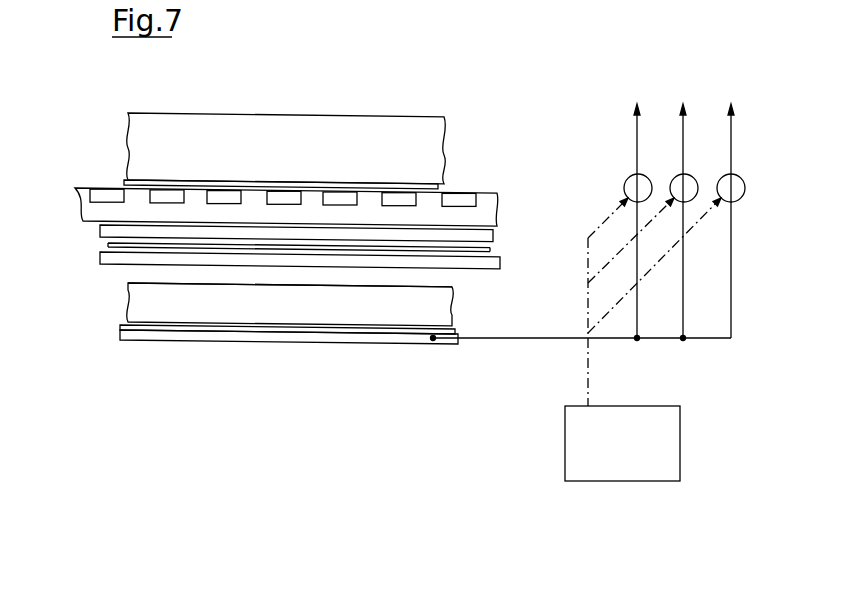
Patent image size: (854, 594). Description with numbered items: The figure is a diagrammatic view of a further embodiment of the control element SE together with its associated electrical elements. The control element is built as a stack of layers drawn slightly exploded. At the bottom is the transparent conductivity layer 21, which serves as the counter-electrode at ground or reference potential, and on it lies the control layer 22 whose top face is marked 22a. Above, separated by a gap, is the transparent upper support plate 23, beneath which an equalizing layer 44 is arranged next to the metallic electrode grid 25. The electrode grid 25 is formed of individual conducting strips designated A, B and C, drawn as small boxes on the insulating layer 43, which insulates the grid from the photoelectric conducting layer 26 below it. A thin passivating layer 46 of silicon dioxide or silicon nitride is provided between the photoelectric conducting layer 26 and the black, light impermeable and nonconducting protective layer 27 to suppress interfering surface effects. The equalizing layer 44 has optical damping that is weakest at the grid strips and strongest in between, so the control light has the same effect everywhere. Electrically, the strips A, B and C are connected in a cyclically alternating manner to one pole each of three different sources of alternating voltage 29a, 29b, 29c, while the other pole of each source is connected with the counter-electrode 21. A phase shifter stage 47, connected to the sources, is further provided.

The conductivity layer 21 is at (118, 337).
The control layer 22 is at (444, 312).
The upper surface of lower block 22a is at (223, 284).
The upper support plate 23 is at (344, 128).
The electrode grid 25 is at (484, 196).
The photoelectric conducting layer 26 is at (494, 238).
The protective layer 27 is at (500, 268).
The source of alternating voltage 29a is at (630, 176).
The source of alternating voltage 29b is at (676, 176).
The source of alternating voltage 29c is at (722, 176).
The insulating layer 43 is at (76, 212).
The equalizing layer 44 is at (125, 183).
The passivating layer 46 is at (490, 252).
The phase shifter stage 47 is at (572, 443).
The control element SE is at (511, 87).